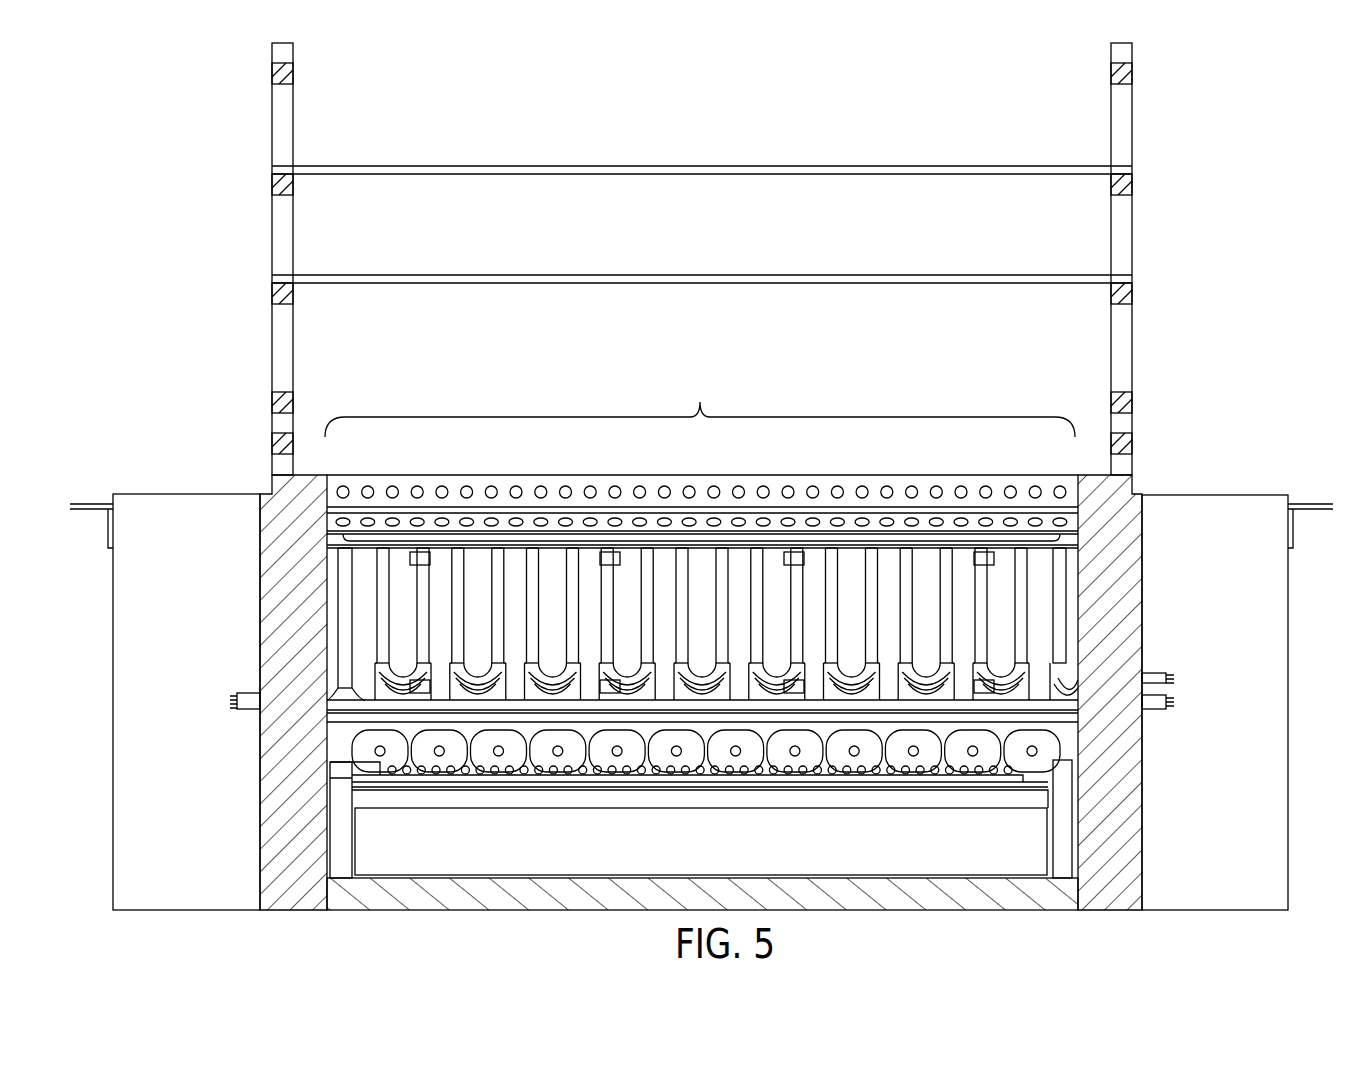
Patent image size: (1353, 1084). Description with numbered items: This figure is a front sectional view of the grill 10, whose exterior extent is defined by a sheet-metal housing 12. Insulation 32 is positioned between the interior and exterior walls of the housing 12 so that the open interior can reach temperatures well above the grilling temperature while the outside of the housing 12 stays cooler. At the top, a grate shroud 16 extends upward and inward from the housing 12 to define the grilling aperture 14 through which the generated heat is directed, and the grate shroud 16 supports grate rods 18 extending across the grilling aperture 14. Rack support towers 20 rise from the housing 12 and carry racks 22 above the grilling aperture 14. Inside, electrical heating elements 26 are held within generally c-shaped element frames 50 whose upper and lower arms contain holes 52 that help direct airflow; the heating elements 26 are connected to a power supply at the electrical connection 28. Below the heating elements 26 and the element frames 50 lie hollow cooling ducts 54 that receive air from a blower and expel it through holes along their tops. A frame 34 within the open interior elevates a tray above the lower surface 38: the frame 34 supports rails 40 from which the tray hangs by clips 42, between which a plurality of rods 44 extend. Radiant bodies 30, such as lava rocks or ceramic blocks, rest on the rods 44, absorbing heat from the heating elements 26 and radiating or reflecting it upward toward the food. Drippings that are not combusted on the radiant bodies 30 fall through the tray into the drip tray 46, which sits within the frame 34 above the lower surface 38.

The grill 10 is at (1275, 382).
The housing 12 is at (1218, 494).
The grilling aperture 14 is at (970, 498).
The grate shroud 16 is at (1060, 500).
The grate rods 18 is at (700, 400).
The rack support towers 20 is at (1125, 211).
The racks 22 is at (1096, 166).
The electrical heating elements 26 is at (1028, 623).
The electrical connection 28 is at (228, 688).
The radiant bodies 30 is at (368, 750).
The insulation 32 is at (277, 598).
The frame 34 is at (1060, 836).
The lower surface 38 is at (1050, 870).
The rails 40 is at (369, 778).
The clips 42 is at (443, 776).
The rods 44 is at (522, 774).
The drip tray 46 is at (352, 846).
The element frames 50 is at (342, 541).
The holes 52 is at (693, 553).
The cooling ducts 54 is at (330, 768).